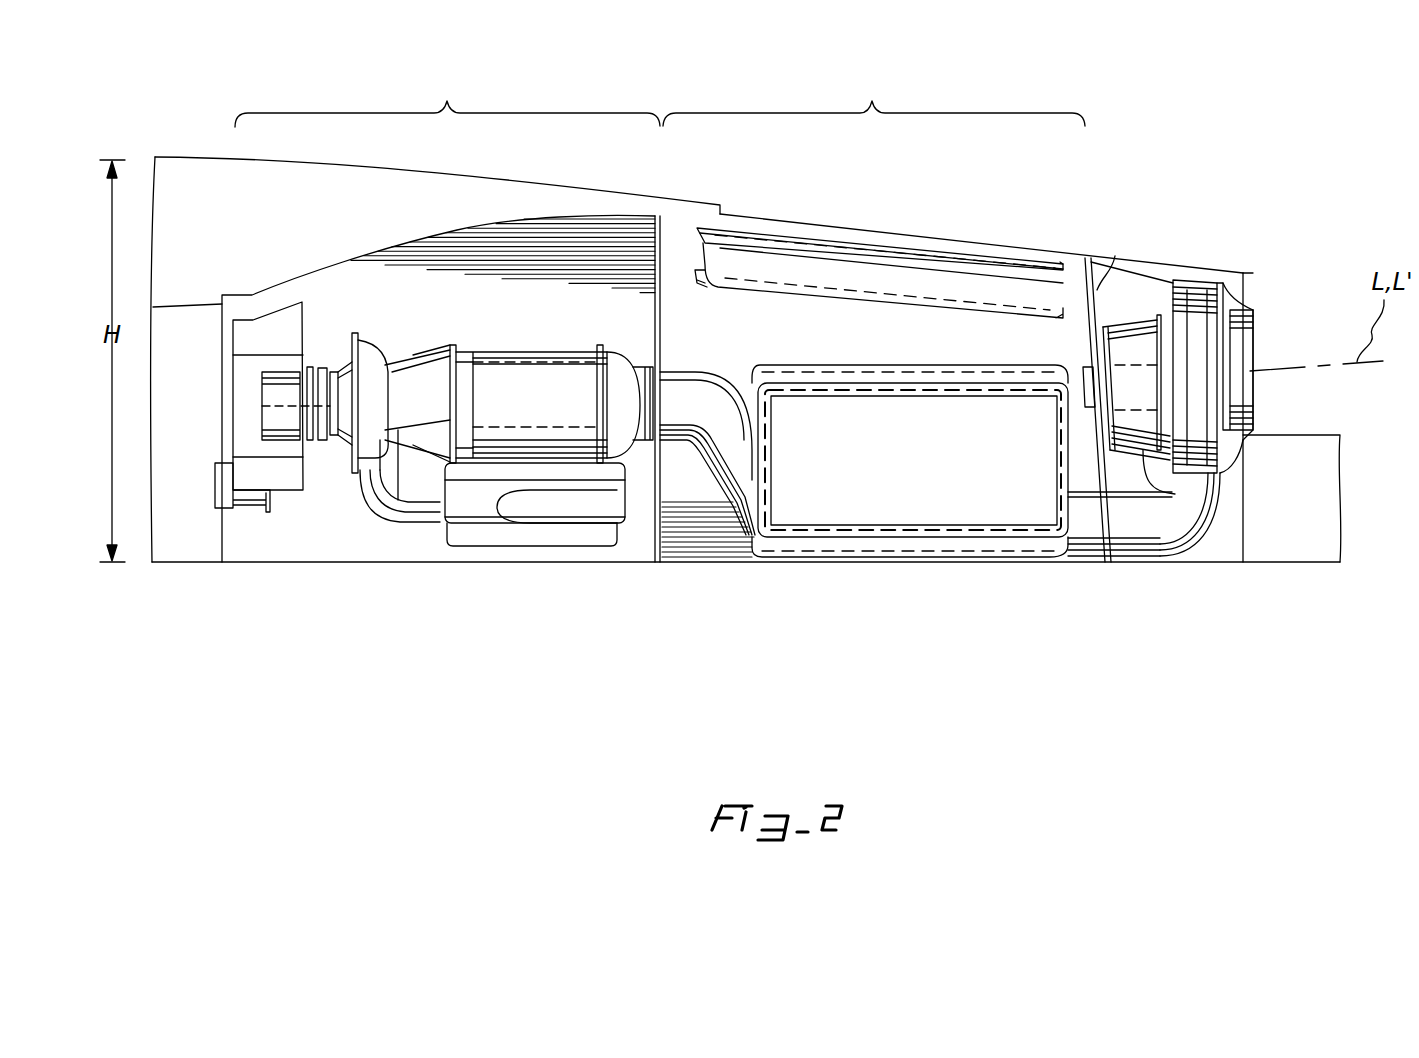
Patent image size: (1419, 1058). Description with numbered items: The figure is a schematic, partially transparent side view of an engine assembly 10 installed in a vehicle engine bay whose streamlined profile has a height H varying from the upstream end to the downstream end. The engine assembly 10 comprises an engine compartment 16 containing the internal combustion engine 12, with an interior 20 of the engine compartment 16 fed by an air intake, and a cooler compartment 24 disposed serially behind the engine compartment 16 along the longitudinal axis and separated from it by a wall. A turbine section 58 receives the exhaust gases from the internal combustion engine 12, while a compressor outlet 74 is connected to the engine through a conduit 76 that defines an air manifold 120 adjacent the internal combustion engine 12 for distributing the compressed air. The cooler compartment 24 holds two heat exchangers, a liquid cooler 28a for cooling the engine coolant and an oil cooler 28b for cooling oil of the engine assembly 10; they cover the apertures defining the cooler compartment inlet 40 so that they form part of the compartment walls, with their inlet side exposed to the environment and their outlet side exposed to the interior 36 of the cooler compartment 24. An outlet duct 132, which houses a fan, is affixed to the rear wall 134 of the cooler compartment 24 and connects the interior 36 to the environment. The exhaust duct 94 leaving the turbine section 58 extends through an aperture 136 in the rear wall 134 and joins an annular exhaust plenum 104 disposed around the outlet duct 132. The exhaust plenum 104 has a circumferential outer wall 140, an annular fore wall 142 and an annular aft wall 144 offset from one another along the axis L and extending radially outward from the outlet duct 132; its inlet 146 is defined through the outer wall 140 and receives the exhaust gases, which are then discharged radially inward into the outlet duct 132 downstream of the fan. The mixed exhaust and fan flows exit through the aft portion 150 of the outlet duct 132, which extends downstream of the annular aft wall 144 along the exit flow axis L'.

The engine assembly 10 is at (708, 200).
The internal combustion engine 12 is at (437, 533).
The engine compartment 16 is at (447, 98).
The interior of the engine compartment 20 is at (398, 309).
The cooler compartment 24 is at (874, 98).
The liquid cooler 28a is at (765, 265).
The oil cooler 28b is at (895, 462).
The interior of the cooler compartment 36 is at (727, 332).
The cooler compartment inlet 40 is at (860, 223).
The turbine section 58 is at (530, 372).
The compressor outlet 74 is at (345, 480).
The conduit 76 is at (385, 500).
The exhaust duct 94 is at (738, 458).
The exhaust plenum 104 is at (1225, 270).
The air manifold 120 is at (478, 507).
The outlet duct 132 is at (1147, 452).
The rear wall 134 is at (1115, 256).
The aperture 136 is at (1108, 565).
The circumferential outer wall 140 is at (1181, 287).
The annular fore wall 142 is at (1148, 308).
The annular aft wall 144 is at (1245, 290).
The inlet of the exhaust plenum 146 is at (1222, 475).
The aft portion of the outlet duct 150 is at (1253, 448).